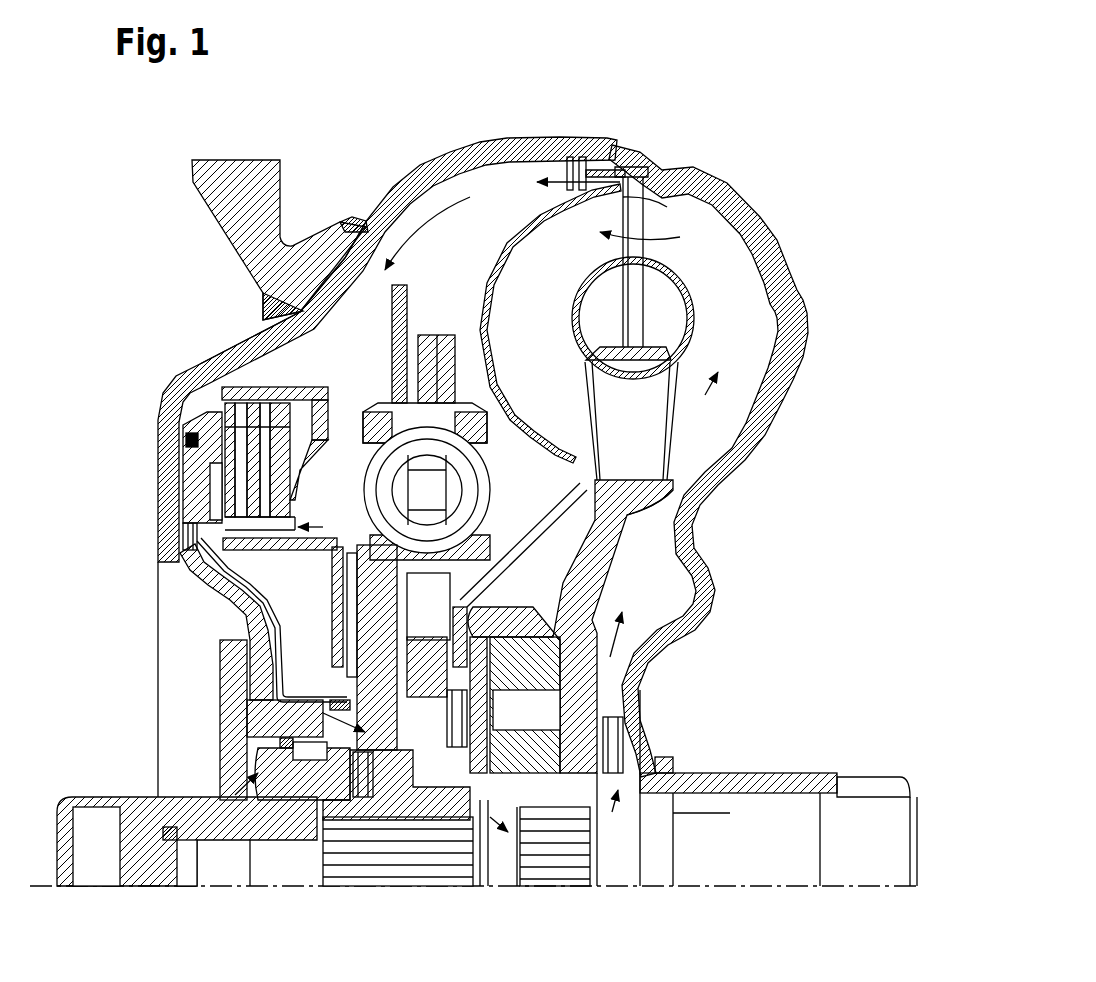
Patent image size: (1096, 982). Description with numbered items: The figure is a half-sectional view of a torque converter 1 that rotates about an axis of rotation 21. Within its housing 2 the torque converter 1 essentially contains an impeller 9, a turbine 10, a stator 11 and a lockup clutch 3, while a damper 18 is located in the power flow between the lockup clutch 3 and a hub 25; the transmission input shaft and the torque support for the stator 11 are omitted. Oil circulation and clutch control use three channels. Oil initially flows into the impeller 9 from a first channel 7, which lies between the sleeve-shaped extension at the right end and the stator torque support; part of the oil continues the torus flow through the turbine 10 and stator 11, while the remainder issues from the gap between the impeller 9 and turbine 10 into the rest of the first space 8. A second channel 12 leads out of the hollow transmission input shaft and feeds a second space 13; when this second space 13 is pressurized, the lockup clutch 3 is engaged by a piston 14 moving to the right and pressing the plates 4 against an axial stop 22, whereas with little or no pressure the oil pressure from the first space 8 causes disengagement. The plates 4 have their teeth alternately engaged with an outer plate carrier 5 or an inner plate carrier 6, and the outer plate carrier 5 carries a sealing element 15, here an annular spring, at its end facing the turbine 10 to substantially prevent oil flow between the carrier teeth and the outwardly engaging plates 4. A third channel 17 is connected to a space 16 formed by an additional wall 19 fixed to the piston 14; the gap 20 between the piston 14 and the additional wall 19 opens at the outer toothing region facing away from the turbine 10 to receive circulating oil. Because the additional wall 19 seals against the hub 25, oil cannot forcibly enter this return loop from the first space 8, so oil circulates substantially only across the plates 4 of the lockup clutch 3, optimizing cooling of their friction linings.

The torque converter 1 is at (752, 128).
The housing 2 is at (198, 360).
The lockup clutch 3 is at (157, 395).
The plates 4 is at (275, 395).
The outer plate carrier 5 is at (287, 378).
The inner plate carrier 6 is at (293, 548).
The first channel 7 is at (657, 830).
The first space 8 is at (502, 228).
The impeller 9 is at (744, 336).
The turbine 10 is at (550, 336).
The stator 11 is at (652, 436).
The second channel 12 is at (263, 870).
The second space 13 is at (237, 593).
The piston 14 is at (193, 472).
The sealing element 15 is at (297, 490).
The space 16 is at (190, 562).
The third channel 17 is at (480, 853).
The damper 18 is at (432, 330).
The additional wall 19 is at (277, 640).
The gap 20 is at (217, 640).
The axis of rotation 21 is at (730, 888).
The axial stop 22 is at (305, 395).
The hub 25 is at (400, 807).